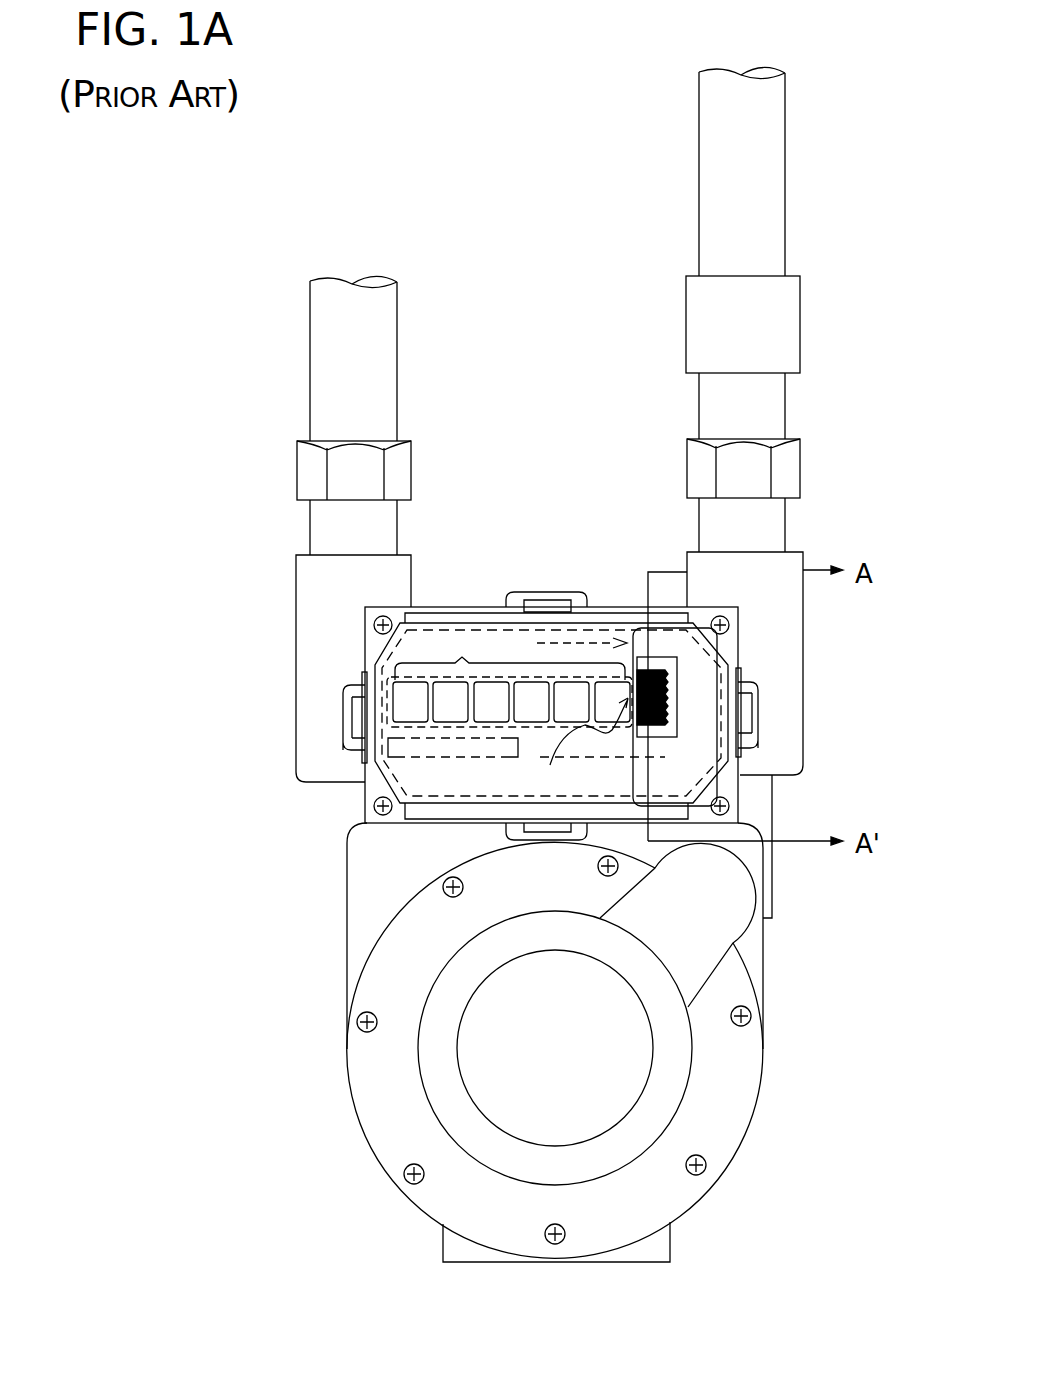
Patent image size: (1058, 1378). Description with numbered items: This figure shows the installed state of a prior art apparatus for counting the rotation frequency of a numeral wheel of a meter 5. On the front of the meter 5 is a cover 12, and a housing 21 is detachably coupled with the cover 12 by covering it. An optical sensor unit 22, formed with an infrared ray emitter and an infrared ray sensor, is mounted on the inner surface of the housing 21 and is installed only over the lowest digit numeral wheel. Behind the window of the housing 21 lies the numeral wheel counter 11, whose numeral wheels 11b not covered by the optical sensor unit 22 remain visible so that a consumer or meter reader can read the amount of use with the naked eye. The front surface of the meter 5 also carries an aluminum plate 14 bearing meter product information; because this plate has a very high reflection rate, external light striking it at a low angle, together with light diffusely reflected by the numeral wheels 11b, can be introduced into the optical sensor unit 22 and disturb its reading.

The meter 5 is at (815, 760).
The numeral wheel counter 11 is at (392, 710).
The numeral wheels 11b is at (465, 660).
The cover 12 is at (383, 653).
The aluminum plate 14 is at (420, 793).
The housing 21 is at (380, 785).
The optical sensor unit 22 is at (673, 676).